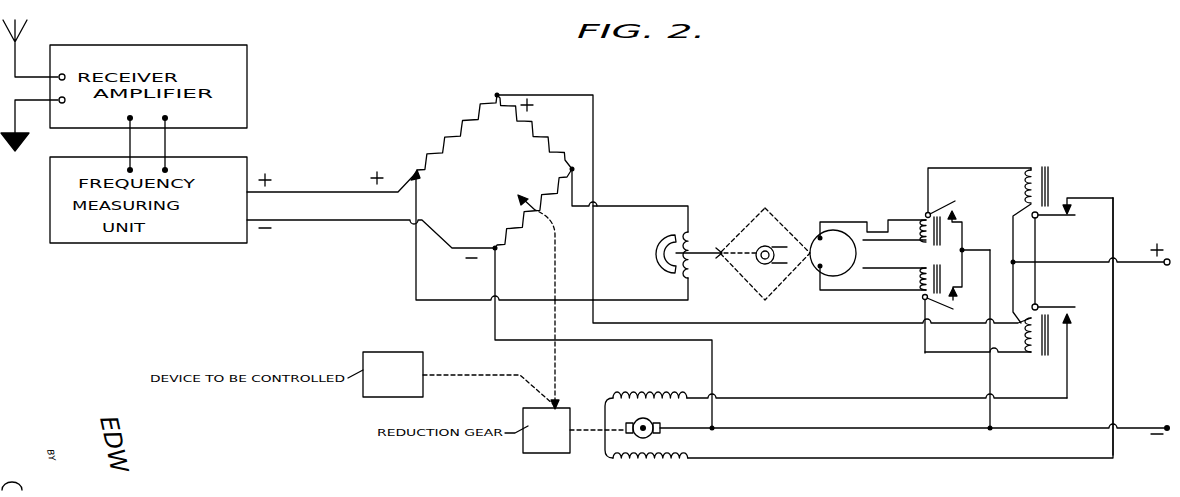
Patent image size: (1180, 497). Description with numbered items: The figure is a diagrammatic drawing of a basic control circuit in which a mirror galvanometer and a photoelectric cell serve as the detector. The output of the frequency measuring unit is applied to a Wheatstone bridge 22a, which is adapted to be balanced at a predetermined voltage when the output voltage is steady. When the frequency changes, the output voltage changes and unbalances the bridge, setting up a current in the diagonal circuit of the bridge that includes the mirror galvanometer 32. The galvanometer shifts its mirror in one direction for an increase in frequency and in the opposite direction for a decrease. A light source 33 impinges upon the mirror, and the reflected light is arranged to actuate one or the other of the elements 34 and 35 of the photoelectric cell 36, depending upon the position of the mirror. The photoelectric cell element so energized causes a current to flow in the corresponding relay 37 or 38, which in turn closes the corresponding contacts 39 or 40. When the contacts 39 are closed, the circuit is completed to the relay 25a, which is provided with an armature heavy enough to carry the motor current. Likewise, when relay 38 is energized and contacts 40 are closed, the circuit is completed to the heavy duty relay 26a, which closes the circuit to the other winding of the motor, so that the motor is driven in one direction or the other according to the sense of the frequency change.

The Wheatstone bridge 22a is at (453, 123).
The mirror galvanometer 32 is at (658, 254).
The light source 33 is at (760, 248).
The photoelectric cell element 34 is at (820, 238).
The photoelectric cell element 35 is at (818, 269).
The photoelectric cell 36 is at (857, 253).
The relay 37 is at (958, 219).
The relay 38 is at (940, 277).
The contacts 39 is at (958, 204).
The contacts 40 is at (949, 306).
The relay 25a is at (1044, 192).
The heavy duty relay 26a is at (1048, 340).